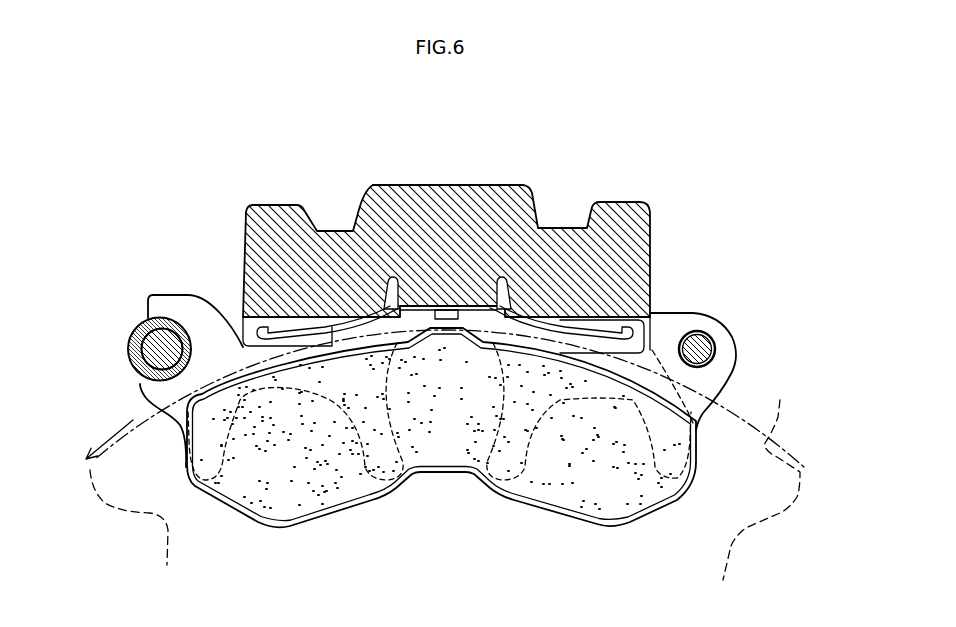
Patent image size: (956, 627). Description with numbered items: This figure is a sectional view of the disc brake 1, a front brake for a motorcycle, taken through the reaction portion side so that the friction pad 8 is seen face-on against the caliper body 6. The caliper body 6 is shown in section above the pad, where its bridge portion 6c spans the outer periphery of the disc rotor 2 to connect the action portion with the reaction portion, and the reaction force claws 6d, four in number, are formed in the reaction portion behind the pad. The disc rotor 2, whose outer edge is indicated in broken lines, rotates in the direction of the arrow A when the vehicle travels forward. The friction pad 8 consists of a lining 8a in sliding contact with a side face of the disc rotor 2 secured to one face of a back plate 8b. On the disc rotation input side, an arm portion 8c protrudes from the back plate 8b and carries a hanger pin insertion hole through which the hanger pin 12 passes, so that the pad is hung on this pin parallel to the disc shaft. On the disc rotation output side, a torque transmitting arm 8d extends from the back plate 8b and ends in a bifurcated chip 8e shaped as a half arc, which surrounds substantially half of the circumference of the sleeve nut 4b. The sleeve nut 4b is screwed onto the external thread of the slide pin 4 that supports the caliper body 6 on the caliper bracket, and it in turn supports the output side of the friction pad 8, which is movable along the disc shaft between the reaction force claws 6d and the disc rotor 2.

The disc brake 1 is at (432, 131).
The disc rotor 2 is at (767, 447).
The slide pin 4 is at (148, 352).
The sleeve nut 4b is at (133, 331).
The caliper body 6 is at (438, 337).
The bridge portion 6c is at (491, 185).
The reaction force claws 6d is at (208, 472).
The friction pad 8 is at (441, 456).
The lining 8a is at (313, 502).
The back plate 8b is at (356, 504).
The arm portion 8c is at (733, 345).
The torque transmitting arm 8d is at (208, 314).
The bifurcated chip 8e is at (139, 398).
The hanger pin 12 is at (698, 345).